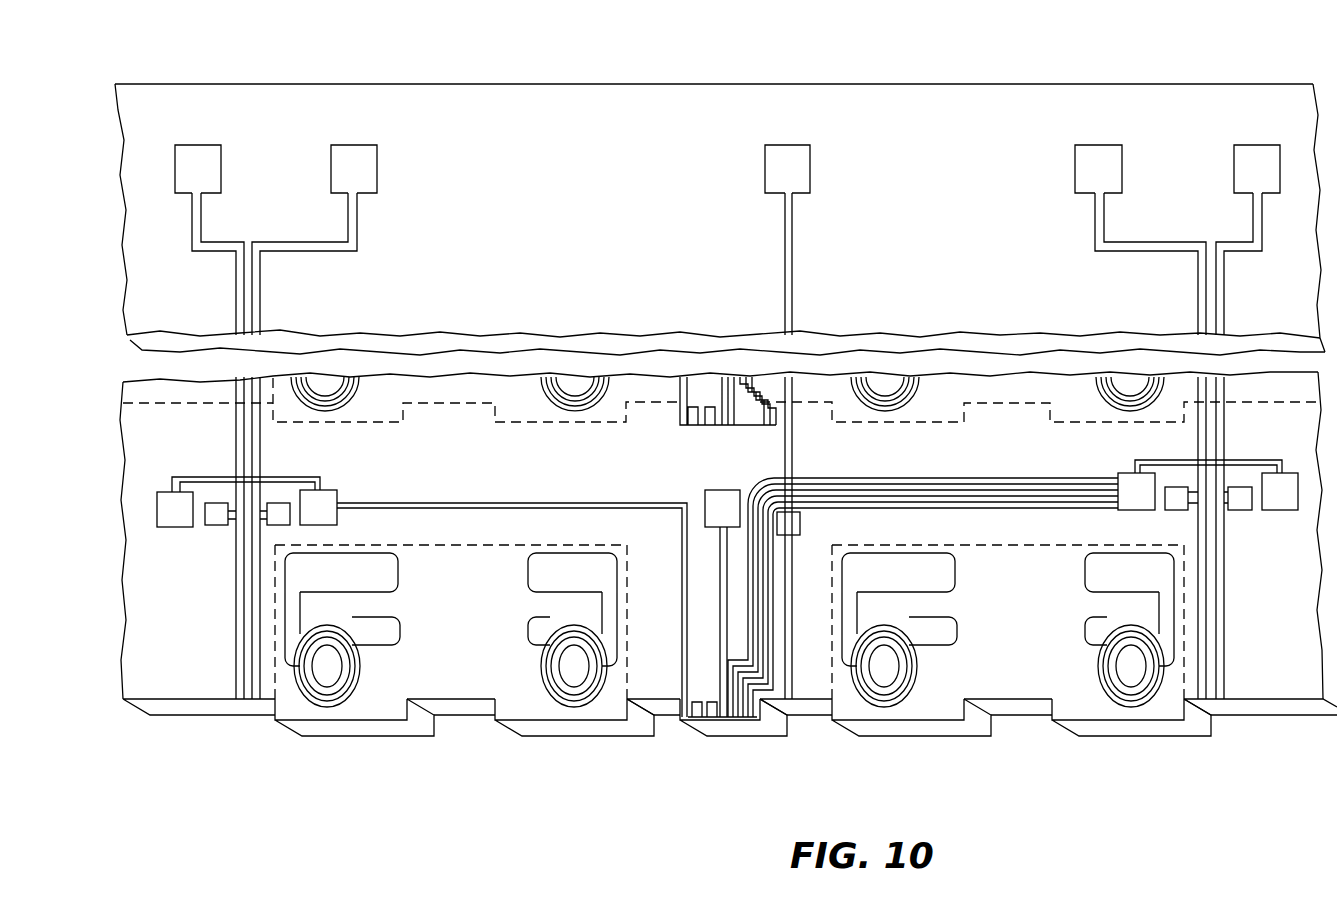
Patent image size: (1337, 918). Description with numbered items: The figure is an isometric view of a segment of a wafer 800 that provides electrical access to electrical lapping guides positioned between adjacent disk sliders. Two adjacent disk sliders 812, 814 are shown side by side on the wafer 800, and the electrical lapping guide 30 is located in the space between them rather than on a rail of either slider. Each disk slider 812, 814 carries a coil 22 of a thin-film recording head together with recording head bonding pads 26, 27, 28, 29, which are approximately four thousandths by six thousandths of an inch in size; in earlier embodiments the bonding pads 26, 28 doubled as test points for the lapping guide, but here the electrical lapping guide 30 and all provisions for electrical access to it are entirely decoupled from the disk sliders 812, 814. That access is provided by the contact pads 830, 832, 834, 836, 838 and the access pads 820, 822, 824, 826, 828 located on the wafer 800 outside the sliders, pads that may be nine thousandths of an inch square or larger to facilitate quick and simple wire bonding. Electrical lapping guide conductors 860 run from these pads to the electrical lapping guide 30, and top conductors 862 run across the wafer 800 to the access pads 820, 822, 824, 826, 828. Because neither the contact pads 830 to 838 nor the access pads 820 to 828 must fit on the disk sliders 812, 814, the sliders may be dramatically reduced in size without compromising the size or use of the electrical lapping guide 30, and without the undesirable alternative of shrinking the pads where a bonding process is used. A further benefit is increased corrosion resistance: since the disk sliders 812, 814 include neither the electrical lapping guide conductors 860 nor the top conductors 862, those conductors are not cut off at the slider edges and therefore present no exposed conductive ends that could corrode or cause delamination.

The wafer 800 is at (632, 39).
The disk slider 812 is at (515, 545).
The disk slider 814 is at (1042, 545).
The coil 22 is at (360, 682).
The recording head bonding pad 26 is at (398, 560).
The recording head bonding pad 27 is at (527, 584).
The recording head bonding pad 28 is at (400, 622).
The recording head bonding pad 29 is at (528, 640).
The electrical lapping guide 30 is at (760, 744).
The access pad 820 is at (173, 527).
The access pad 822 is at (338, 496).
The access pad 824 is at (722, 490).
The access pad 826 is at (1135, 512).
The access pad 828 is at (1290, 510).
The contact pad 830 is at (214, 527).
The contact pad 832 is at (290, 528).
The contact pad 834 is at (800, 523).
The contact pad 836 is at (1137, 476).
The contact pad 838 is at (1240, 510).
The electrical lapping guide conductor 860 is at (540, 503).
The top conductor 862 is at (255, 445).